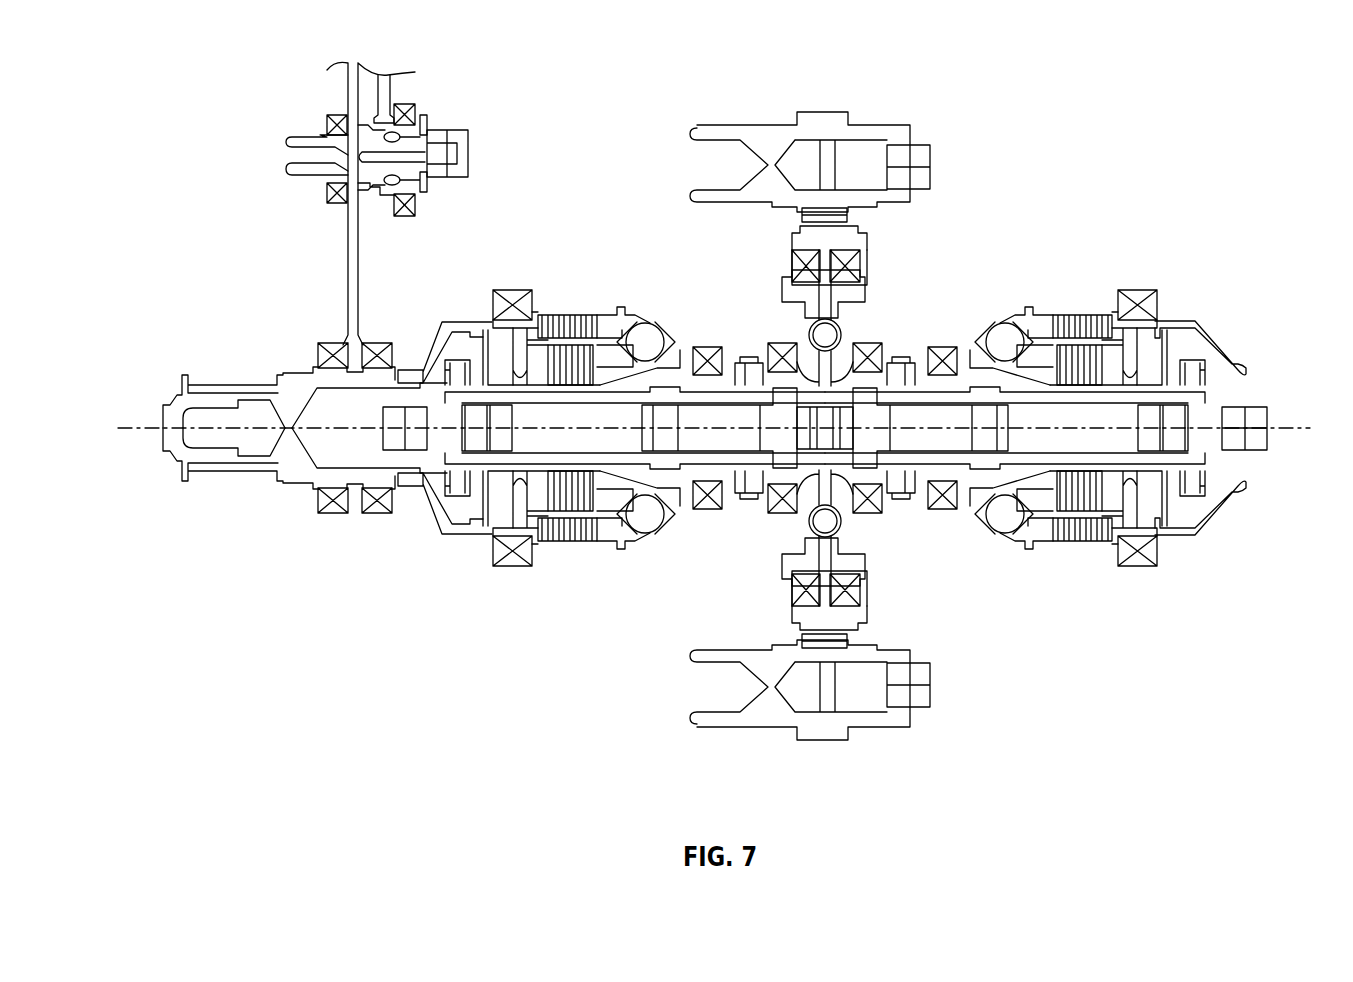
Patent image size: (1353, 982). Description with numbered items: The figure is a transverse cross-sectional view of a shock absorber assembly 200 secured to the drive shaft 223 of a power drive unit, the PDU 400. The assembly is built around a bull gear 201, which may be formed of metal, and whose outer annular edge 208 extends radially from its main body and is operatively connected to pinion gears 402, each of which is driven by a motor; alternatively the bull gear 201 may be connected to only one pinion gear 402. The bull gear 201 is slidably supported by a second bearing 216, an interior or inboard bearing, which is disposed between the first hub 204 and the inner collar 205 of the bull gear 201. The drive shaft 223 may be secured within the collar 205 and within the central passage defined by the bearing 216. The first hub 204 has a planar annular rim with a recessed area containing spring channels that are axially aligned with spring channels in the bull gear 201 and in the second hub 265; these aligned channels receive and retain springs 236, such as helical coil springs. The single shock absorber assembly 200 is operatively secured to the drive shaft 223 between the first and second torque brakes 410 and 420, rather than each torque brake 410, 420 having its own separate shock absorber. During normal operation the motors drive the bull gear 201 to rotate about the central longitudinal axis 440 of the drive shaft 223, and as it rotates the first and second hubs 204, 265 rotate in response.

The PDU 400 is at (1205, 257).
The pinion gear 402 is at (843, 148).
The shock absorber assembly 200 is at (850, 300).
The bull gear 201 is at (848, 240).
The first hub 204 is at (863, 288).
The inner collar 205 is at (783, 302).
The outer annular edge 208 is at (798, 213).
The second bearing 216 is at (878, 353).
The drive shaft 223 is at (875, 405).
The springs 236 is at (843, 327).
The second hub 265 is at (778, 305).
The first torque brake 410 is at (478, 535).
The second torque brake 420 is at (1200, 357).
The central longitudinal axis 440 is at (138, 429).